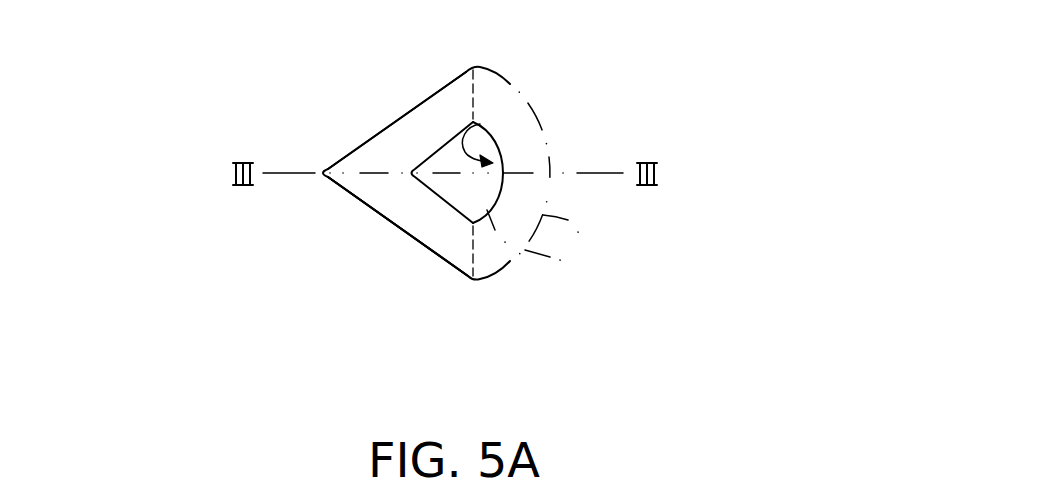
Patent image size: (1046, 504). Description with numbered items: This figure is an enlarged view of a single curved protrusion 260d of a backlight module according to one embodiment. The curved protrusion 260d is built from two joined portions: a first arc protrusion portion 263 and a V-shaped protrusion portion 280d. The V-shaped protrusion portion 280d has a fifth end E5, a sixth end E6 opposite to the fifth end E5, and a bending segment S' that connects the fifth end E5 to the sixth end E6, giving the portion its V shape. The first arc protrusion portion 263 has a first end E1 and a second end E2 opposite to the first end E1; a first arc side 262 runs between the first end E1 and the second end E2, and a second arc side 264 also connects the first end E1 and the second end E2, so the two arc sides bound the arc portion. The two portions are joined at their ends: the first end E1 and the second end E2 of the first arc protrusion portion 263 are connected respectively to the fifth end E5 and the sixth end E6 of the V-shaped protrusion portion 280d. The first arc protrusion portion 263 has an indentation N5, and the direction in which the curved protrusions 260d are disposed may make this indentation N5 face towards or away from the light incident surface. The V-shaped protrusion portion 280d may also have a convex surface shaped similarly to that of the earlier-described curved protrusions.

The curved protrusion 260d is at (697, 373).
The V-shaped protrusion portion 280d is at (422, 227).
The bending segment S' is at (363, 226).
The fifth end E5 is at (462, 95).
The sixth end E6 is at (460, 252).
The first end E1 is at (493, 95).
The second end E2 is at (490, 257).
The indentation N5 is at (473, 122).
The first arc protrusion portion 263 is at (533, 153).
The first arc side 262 is at (590, 240).
The second arc side 264 is at (573, 267).